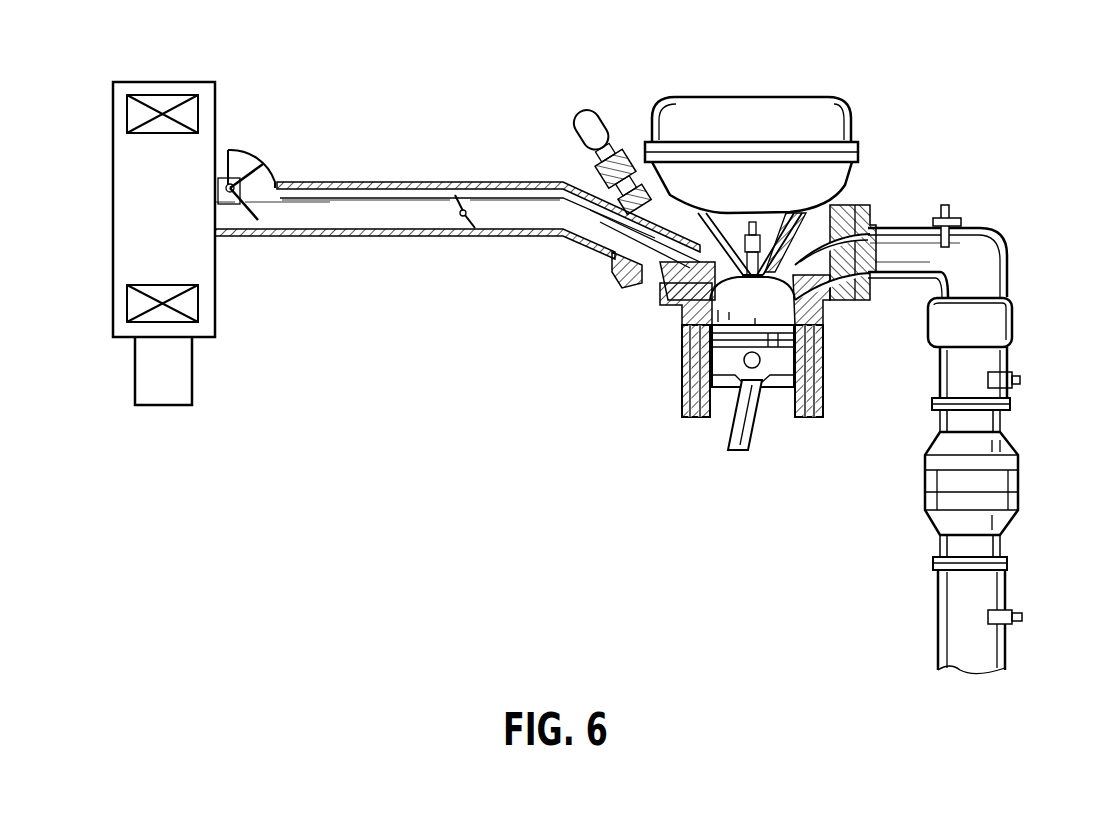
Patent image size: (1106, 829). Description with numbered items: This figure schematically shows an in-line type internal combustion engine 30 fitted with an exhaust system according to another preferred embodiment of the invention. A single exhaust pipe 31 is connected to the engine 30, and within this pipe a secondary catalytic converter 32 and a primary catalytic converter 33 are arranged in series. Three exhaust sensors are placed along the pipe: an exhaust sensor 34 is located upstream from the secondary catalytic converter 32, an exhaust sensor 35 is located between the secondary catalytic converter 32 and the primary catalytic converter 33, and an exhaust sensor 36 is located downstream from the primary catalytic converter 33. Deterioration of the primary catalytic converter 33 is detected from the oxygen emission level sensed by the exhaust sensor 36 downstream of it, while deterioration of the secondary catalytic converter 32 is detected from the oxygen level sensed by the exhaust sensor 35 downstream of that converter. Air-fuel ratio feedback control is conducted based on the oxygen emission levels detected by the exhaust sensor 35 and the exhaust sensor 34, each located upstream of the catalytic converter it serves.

The engine 30 is at (962, 108).
The exhaust pipe 31 is at (985, 262).
The secondary catalytic converter 32 is at (930, 343).
The primary catalytic converter 33 is at (1020, 485).
The exhaust sensor 34 is at (947, 207).
The exhaust sensor 35 is at (1016, 378).
The exhaust sensor 36 is at (1018, 615).